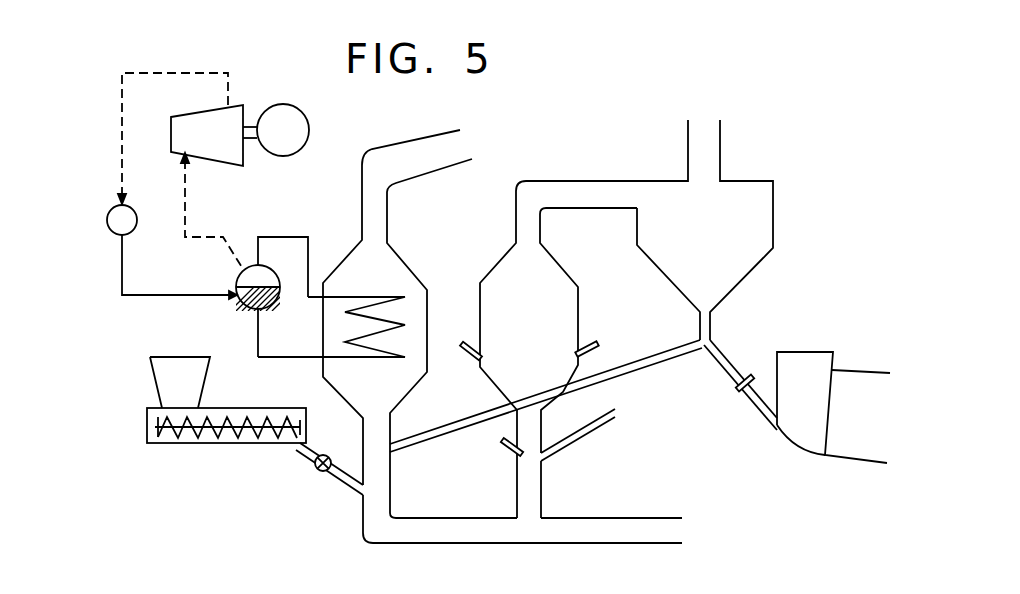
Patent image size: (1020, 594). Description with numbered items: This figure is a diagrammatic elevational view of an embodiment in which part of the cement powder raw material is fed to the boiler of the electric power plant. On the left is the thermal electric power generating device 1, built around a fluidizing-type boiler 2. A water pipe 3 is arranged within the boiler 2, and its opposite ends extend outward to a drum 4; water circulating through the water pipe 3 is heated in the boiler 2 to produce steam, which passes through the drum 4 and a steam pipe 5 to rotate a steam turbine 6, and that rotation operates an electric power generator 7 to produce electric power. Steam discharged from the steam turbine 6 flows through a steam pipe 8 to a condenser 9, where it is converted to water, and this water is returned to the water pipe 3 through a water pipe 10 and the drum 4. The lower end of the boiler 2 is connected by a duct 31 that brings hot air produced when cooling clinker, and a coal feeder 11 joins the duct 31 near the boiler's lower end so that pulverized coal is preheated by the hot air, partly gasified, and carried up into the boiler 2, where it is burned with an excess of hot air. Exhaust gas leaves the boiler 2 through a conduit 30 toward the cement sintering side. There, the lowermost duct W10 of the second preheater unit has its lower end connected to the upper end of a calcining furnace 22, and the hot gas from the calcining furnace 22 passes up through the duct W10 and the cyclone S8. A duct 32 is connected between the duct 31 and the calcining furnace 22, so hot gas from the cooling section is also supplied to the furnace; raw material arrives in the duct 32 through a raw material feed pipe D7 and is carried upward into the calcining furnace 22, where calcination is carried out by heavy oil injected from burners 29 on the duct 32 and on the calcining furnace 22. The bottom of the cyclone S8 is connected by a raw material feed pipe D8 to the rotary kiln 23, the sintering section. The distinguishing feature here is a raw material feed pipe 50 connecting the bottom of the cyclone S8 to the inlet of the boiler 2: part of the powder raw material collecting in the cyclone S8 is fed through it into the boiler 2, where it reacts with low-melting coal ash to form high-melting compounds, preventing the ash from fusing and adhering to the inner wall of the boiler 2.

The thermal electric power generating device 1 is at (116, 352).
The boiler 2 is at (402, 263).
The water pipe 3 is at (345, 293).
The drum 4 is at (247, 303).
The steam pipe 5 is at (186, 214).
The steam turbine 6 is at (233, 167).
The electric power generator 7 is at (308, 121).
The steam pipe 8 is at (167, 72).
The condenser 9 is at (113, 209).
The water pipe 10 is at (175, 295).
The coal feeder 11 is at (218, 445).
The calcining furnace 22 is at (567, 275).
The rotary kiln 23 is at (867, 370).
The burner 29 is at (463, 340).
The conduit 30 is at (423, 148).
The duct 31 is at (527, 535).
The duct 32 is at (535, 490).
The raw material feed pipe 50 is at (643, 365).
The duct W10 is at (606, 190).
The cyclone S8 is at (743, 275).
The raw material feed pipe D7 is at (573, 440).
The raw material feed pipe D8 is at (725, 375).